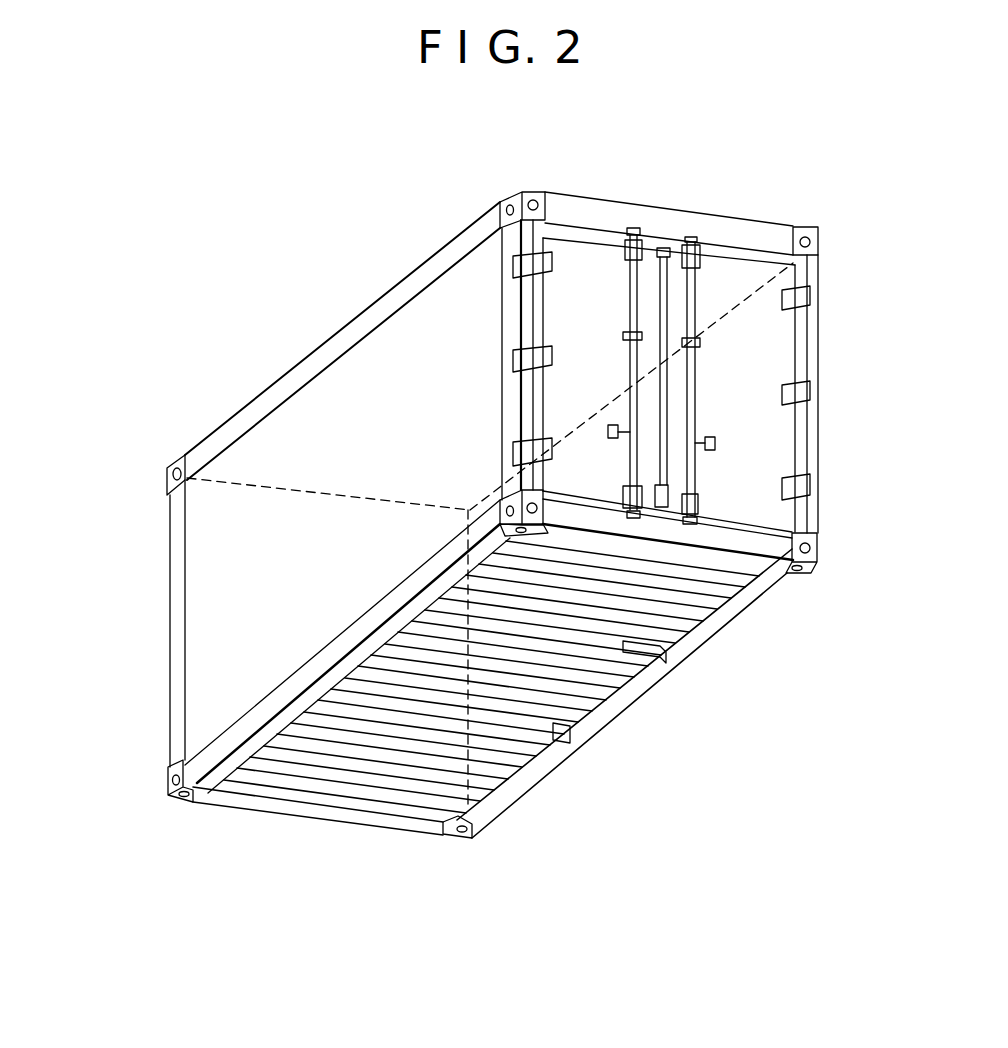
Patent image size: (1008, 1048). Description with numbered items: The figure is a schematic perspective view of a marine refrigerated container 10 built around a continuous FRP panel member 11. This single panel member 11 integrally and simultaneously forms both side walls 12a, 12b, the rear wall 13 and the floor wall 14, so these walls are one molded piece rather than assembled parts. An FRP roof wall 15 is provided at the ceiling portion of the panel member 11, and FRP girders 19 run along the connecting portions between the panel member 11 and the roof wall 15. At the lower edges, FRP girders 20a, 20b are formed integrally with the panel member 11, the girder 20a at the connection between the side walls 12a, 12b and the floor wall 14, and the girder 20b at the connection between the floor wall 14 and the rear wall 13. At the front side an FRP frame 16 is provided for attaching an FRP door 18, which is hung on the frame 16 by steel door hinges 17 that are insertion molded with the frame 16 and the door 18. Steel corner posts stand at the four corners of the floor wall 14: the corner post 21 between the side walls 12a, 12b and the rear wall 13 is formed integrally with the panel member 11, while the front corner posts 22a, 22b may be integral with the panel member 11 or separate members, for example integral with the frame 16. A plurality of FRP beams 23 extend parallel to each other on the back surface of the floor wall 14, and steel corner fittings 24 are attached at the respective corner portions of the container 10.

The marine refrigerated container 10 is at (318, 343).
The panel member 11 is at (331, 408).
The side wall 12a is at (200, 534).
The side wall 12b is at (491, 505).
The rear wall 13 is at (220, 503).
The floor wall 14 is at (628, 640).
The roof wall 15 is at (375, 360).
The frame 16 is at (748, 225).
The door hinges 17 is at (808, 293).
The door 18 is at (748, 310).
The girders 19 is at (247, 415).
The girder 20a is at (226, 742).
The girder 20b is at (333, 808).
The corner post 21 is at (175, 580).
The corner post 22a is at (502, 320).
The corner post 22b is at (818, 335).
The beams 23 is at (493, 727).
The corner fittings 24 is at (167, 458).